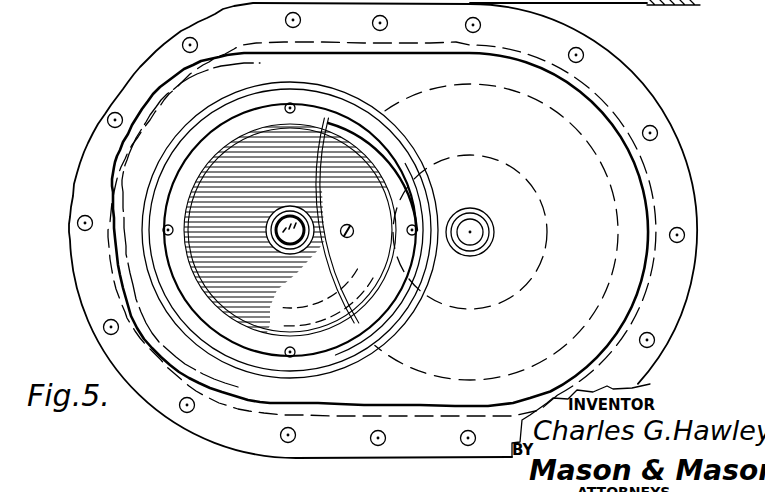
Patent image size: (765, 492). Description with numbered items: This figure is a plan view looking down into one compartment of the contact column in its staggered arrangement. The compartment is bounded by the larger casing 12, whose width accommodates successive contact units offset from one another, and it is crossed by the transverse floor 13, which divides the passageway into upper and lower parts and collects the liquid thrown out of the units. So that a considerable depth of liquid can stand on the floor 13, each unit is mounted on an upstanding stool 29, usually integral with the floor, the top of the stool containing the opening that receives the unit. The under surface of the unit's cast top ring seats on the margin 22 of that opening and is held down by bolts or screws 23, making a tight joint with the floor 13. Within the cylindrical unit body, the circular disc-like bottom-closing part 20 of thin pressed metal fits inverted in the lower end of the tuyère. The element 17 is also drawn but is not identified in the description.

The casing 12 is at (641, 160).
The transverse floor 13 is at (400, 97).
The eccentric ring 17 is at (334, 129).
The bottom-closing part 20 is at (290, 229).
The margin of opening 22 is at (320, 349).
The bolts or screws 23 is at (349, 221).
The upstanding stools 29 is at (409, 147).